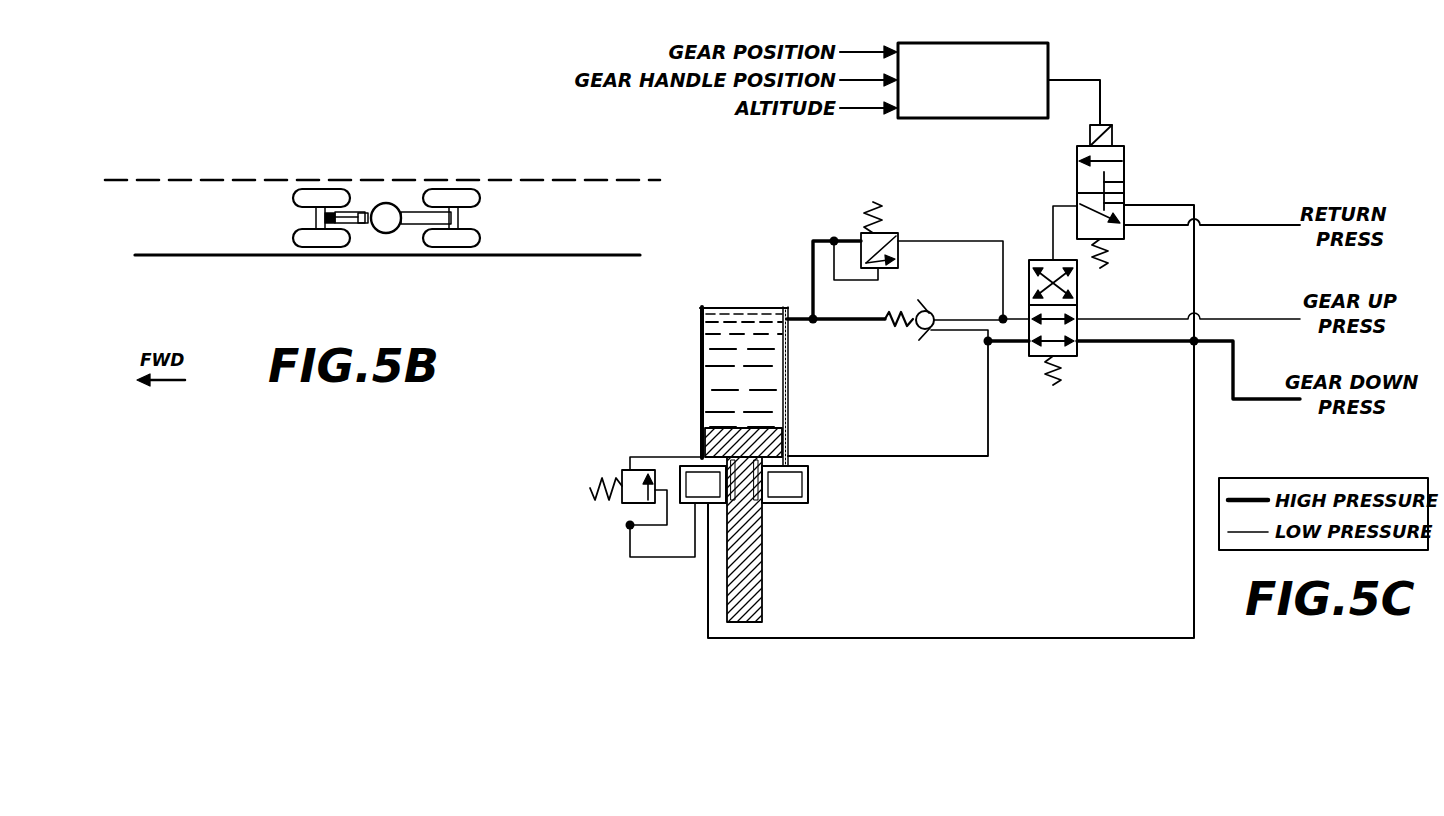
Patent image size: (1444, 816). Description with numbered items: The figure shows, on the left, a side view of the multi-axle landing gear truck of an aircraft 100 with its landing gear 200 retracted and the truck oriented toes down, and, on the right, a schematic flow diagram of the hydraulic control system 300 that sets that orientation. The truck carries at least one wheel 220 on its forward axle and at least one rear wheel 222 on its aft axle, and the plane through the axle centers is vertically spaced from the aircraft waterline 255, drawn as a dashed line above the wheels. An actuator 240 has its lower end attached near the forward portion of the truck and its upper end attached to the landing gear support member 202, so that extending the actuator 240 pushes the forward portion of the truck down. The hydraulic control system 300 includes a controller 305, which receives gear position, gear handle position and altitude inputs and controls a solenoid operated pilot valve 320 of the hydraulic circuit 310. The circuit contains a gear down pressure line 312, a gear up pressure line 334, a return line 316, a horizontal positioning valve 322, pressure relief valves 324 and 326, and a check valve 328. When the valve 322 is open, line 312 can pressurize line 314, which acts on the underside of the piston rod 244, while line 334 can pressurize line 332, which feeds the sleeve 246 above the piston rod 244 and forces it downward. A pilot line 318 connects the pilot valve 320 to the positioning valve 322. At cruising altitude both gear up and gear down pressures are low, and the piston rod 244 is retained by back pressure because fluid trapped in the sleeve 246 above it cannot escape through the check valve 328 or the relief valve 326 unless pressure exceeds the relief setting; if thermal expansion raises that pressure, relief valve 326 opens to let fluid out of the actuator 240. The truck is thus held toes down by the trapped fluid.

In FIG. 5B, the aircraft 100 is at (219, 278).
In FIG. 5B, the landing gear 200 is at (562, 218).
In FIG. 5B, the landing gear support member 202 is at (406, 205).
In FIG. 5B, the wheel 220 is at (293, 202).
In FIG. 5B, the rear wheel 222 is at (470, 201).
In FIG. 5B, the actuator 240 is at (364, 212).
In FIG. 5B, the aircraft waterline 255 is at (255, 179).
In FIG. 5C, the piston rod 244 is at (765, 512).
In FIG. 5C, the sleeve 246 is at (728, 307).
In FIG. 5C, the hydraulic control system 300 is at (1264, 115).
In FIG. 5C, the controller 305 is at (973, 43).
In FIG. 5C, the hydraulic circuit 310 is at (1226, 434).
In FIG. 5C, the line 312 is at (1131, 341).
In FIG. 5C, the line 314 is at (988, 410).
In FIG. 5C, the line 316 is at (1194, 268).
In FIG. 5C, the pilot line 318 is at (1052, 220).
In FIG. 5C, the solenoid operated pilot valve 320 is at (1110, 125).
In FIG. 5C, the horizontal positioning valve 322 is at (1077, 312).
In FIG. 5C, the pressure relief valve 324 is at (625, 500).
In FIG. 5C, the pressure relief valve 326 is at (893, 233).
In FIG. 5C, the check valve 328 is at (928, 302).
In FIG. 5C, the line 332 is at (953, 319).
In FIG. 5C, the line 334 is at (1137, 318).